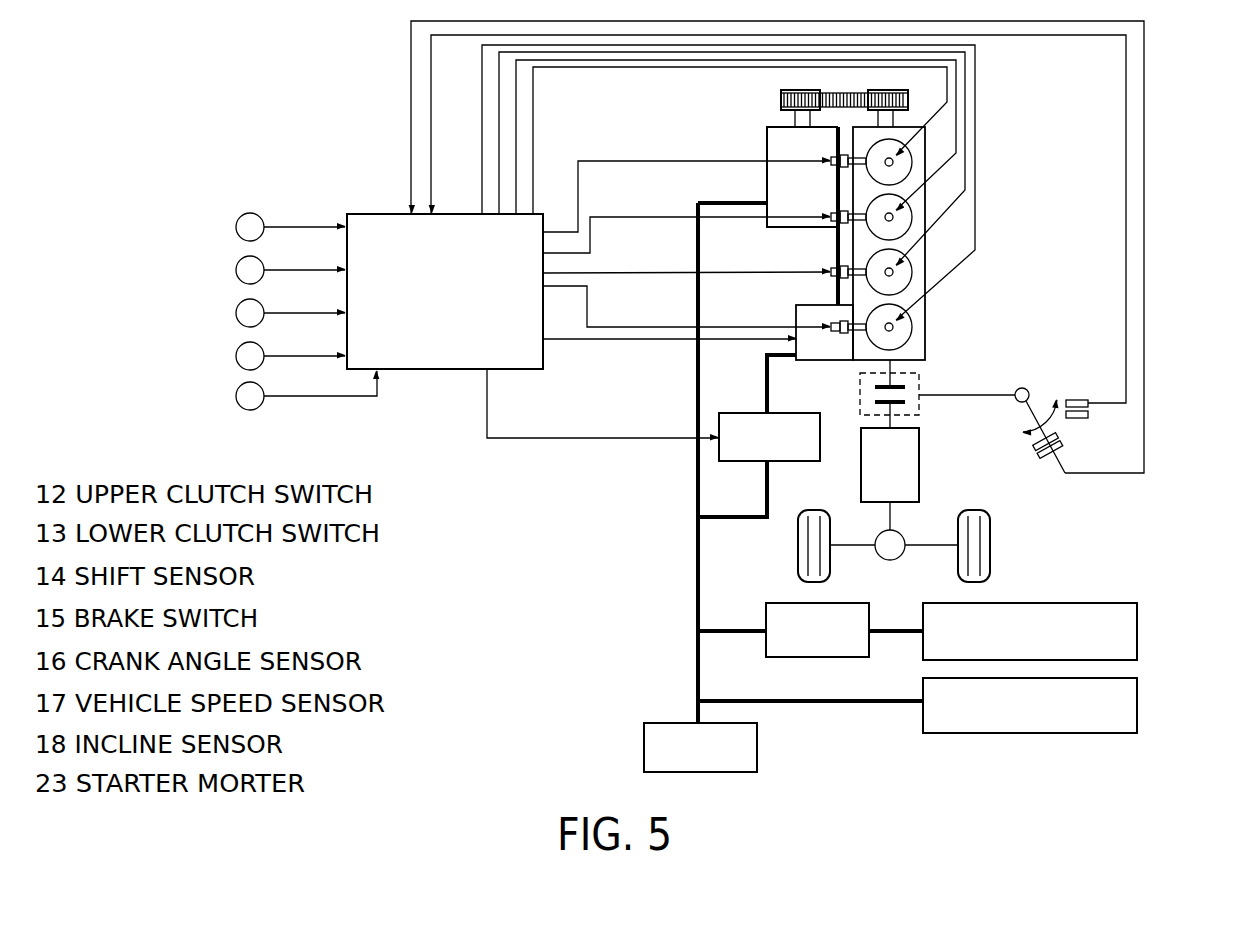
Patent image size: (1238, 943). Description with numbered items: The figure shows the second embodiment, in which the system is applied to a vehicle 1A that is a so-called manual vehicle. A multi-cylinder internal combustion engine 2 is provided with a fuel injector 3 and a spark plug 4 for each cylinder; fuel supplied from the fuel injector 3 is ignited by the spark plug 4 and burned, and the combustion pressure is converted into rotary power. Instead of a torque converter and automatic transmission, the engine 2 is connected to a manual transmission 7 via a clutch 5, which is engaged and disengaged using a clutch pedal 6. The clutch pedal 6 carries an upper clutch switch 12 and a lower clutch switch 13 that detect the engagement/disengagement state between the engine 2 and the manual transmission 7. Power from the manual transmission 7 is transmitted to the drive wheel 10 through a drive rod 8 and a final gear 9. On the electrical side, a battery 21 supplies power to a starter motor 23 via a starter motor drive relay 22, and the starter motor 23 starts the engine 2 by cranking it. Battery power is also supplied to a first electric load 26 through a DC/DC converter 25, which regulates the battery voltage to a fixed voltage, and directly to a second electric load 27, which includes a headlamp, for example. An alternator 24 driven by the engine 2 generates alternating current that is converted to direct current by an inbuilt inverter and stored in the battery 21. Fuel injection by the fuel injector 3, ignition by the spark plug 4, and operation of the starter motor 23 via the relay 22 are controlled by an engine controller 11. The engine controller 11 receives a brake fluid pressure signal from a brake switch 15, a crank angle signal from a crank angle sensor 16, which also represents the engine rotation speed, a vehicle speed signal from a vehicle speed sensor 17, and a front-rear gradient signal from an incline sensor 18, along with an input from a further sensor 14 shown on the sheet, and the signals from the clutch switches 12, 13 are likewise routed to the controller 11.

The vehicle 1A is at (1053, 512).
The internal combustion engine 2 is at (925, 345).
The fuel injector 3 is at (843, 224).
The spark plug 4 is at (898, 166).
The clutch 5 is at (919, 380).
The clutch pedal 6 is at (1025, 415).
The manual transmission 7 is at (910, 441).
The drive rod 8 is at (895, 515).
The final gear 9 is at (898, 551).
The drive wheel 10 is at (990, 545).
The engine controller 11 is at (382, 212).
The upper clutch switch 12 is at (1080, 417).
The lower clutch switch 13 is at (1042, 453).
The shift sensor 14 is at (236, 222).
The brake switch 15 is at (236, 265).
The crank angle sensor 16 is at (236, 308).
The vehicle speed sensor 17 is at (236, 351).
The incline sensor 18 is at (236, 391).
The battery 21 is at (757, 745).
The starter motor drive relay 22 is at (781, 413).
The starter motor 23 is at (796, 318).
The alternator 24 is at (767, 132).
The DC/DC converter 25 is at (833, 603).
The first electric load 26 is at (1140, 612).
The second electric load 27 is at (1140, 688).